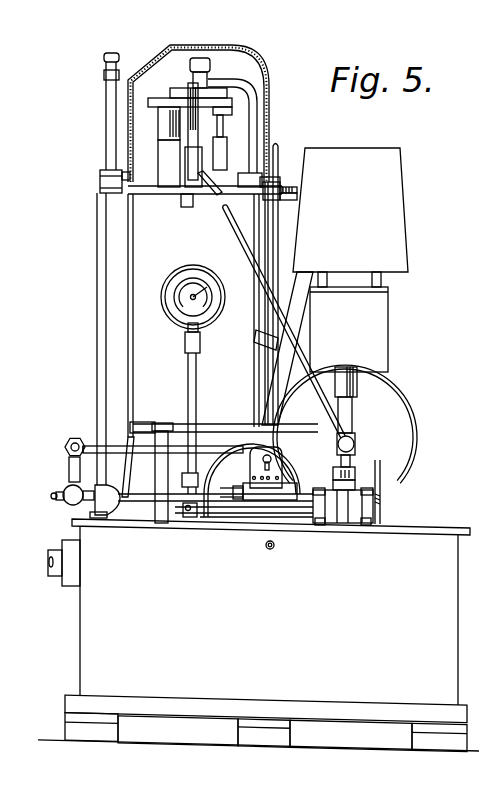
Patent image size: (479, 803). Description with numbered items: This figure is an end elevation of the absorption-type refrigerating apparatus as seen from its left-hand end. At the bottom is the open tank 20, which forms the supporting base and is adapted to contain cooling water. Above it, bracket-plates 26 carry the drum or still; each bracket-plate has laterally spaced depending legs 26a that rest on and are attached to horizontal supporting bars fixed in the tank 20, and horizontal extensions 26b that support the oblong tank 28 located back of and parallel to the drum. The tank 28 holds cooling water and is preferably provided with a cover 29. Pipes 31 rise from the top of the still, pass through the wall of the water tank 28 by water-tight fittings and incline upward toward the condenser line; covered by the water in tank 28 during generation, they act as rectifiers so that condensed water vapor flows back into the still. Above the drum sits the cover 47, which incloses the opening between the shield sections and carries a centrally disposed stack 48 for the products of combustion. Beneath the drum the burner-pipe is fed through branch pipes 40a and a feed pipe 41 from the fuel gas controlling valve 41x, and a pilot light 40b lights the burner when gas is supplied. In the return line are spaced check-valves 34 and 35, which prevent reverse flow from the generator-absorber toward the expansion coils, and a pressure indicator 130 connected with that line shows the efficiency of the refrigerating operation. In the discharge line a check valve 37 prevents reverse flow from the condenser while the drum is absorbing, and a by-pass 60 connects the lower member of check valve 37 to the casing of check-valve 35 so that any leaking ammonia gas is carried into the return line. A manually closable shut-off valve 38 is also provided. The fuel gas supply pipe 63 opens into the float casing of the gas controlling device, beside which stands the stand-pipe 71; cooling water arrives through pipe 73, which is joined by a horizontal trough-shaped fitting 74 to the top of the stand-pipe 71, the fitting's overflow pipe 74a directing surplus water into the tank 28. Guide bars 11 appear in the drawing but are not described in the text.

The open tank 20 is at (71, 616).
The bracket-plates 26 is at (383, 404).
The depending legs 26a is at (217, 524).
The horizontal extensions 26b is at (147, 422).
The oblong tank 28 is at (137, 228).
The cover 29 is at (190, 48).
The pipes 31 is at (300, 343).
The check-valve 34 is at (378, 506).
The check-valve 35 is at (352, 417).
The check valve 37 is at (220, 133).
The shut-off valve 38 is at (108, 183).
The branch pipes 40a is at (150, 500).
The pilot light 40b is at (266, 485).
The feed pipe 41 is at (117, 448).
The fuel gas controlling valve 41x is at (183, 83).
The cover 47 is at (378, 302).
The stack 48 is at (403, 273).
The by-pass 60 is at (228, 230).
The fuel gas supply pipe 63 is at (232, 78).
The stand-pipe 71 is at (222, 118).
The pipe 73 is at (105, 160).
The trough-shaped fitting 74 is at (165, 101).
The overflow pipe 74a is at (156, 122).
The guide bars 11 is at (279, 223).
The pressure indicator 130 is at (207, 324).